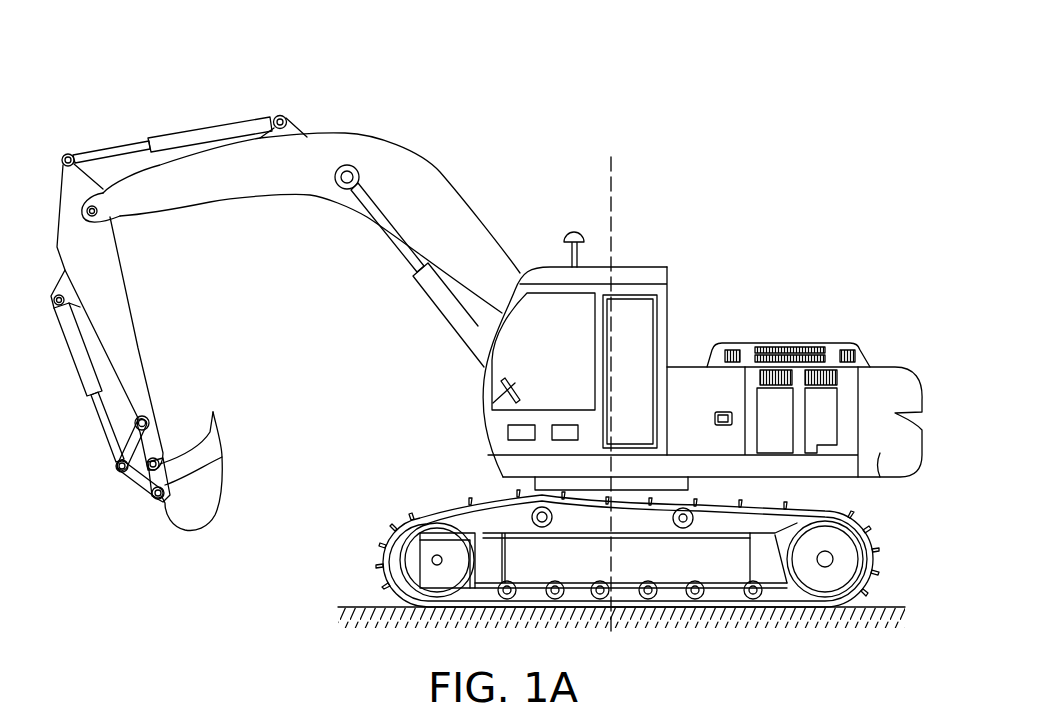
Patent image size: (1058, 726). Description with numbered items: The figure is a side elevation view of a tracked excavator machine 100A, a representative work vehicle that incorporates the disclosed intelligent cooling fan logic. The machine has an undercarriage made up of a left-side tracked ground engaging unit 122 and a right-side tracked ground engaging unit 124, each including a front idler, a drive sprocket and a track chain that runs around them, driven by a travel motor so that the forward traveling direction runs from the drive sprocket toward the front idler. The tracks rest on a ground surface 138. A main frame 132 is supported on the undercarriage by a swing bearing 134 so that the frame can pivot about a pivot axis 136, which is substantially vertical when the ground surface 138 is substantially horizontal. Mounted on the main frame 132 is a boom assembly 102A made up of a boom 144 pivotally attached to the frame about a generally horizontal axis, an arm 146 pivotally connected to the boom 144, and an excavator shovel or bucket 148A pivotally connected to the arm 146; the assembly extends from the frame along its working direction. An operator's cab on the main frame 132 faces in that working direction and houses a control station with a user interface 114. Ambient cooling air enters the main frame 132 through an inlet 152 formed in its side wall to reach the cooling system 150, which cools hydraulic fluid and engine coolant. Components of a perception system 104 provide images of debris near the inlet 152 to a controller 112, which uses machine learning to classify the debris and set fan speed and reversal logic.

The tracked excavator machine 100A is at (812, 181).
The boom assembly 102A is at (445, 152).
The perception system 104 is at (508, 432).
The controller 112 is at (558, 440).
The user interface 114 is at (507, 380).
The left-side tracked ground engaging unit 122 is at (920, 540).
The right-side tracked ground engaging unit 124 is at (884, 563).
The main frame 132 is at (835, 468).
The swing bearing 134 is at (533, 492).
The pivot axis 136 is at (612, 176).
The ground surface 138 is at (887, 607).
The boom 144 is at (427, 243).
The arm 146 is at (112, 302).
The bucket 148A is at (197, 520).
The cooling system 150 is at (866, 320).
The inlet 152 is at (828, 400).